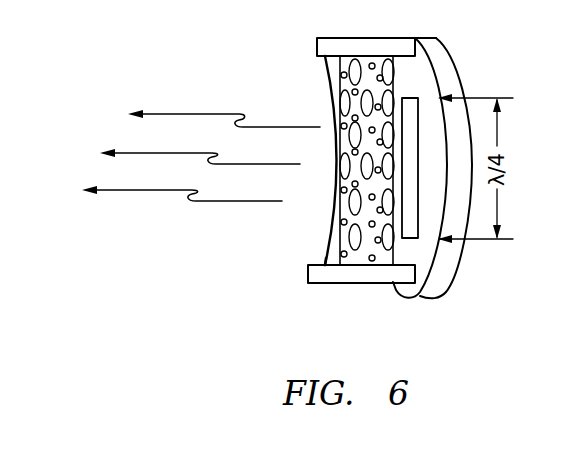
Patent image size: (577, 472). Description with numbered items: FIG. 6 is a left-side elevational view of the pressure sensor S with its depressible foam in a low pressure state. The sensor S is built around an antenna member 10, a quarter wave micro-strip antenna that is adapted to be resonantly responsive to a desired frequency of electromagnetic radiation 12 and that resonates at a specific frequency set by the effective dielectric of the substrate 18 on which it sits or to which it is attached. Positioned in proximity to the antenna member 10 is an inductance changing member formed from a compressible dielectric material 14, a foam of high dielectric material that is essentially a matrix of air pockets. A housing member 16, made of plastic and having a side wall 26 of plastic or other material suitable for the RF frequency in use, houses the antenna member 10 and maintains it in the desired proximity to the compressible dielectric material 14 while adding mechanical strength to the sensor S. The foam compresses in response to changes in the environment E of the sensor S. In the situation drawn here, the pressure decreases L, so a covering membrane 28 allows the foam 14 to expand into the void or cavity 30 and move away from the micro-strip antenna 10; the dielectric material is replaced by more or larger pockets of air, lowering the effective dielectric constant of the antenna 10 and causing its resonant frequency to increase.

The antenna member 10 is at (410, 108).
The electromagnetic radiation 12 is at (194, 155).
The compressible dielectric material 14 is at (345, 260).
The housing member 16 is at (366, 290).
The substrate 18 is at (432, 292).
The side wall 26 is at (317, 45).
The covering membrane 28 is at (331, 79).
The cavity 30 is at (320, 259).
The pressure decrease L is at (262, 86).
The environment E is at (161, 258).
The pressure sensor S is at (481, 280).